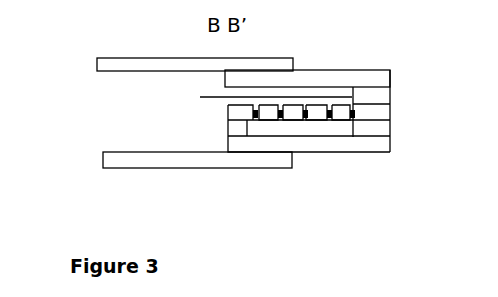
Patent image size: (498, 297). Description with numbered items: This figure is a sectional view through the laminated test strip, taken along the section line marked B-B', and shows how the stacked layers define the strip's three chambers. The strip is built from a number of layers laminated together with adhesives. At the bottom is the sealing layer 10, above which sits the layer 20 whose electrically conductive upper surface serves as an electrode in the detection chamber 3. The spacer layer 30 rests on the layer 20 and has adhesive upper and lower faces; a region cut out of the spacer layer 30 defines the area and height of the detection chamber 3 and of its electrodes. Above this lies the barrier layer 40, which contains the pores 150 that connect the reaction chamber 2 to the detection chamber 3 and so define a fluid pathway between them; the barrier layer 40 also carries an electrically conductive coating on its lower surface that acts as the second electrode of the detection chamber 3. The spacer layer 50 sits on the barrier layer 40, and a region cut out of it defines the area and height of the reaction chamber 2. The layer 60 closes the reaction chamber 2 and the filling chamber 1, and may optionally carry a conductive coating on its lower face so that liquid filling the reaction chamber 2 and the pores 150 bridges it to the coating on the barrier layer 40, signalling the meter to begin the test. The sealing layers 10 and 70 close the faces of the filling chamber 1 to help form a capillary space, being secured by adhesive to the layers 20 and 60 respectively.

The filling chamber 1 is at (165, 108).
The reaction chamber 2 is at (300, 88).
The detection chamber 3 is at (314, 129).
The sealing layer 10 is at (103, 162).
The layer carrying electrically conductive upper surface 20 is at (390, 140).
The spacer layer 30 is at (228, 130).
The barrier layer 40 is at (390, 110).
The spacer layer 50 is at (352, 97).
The layer closing reaction chamber and filling chamber 60 is at (390, 78).
The sealing layer 70 is at (97, 65).
The pores 150 is at (352, 118).